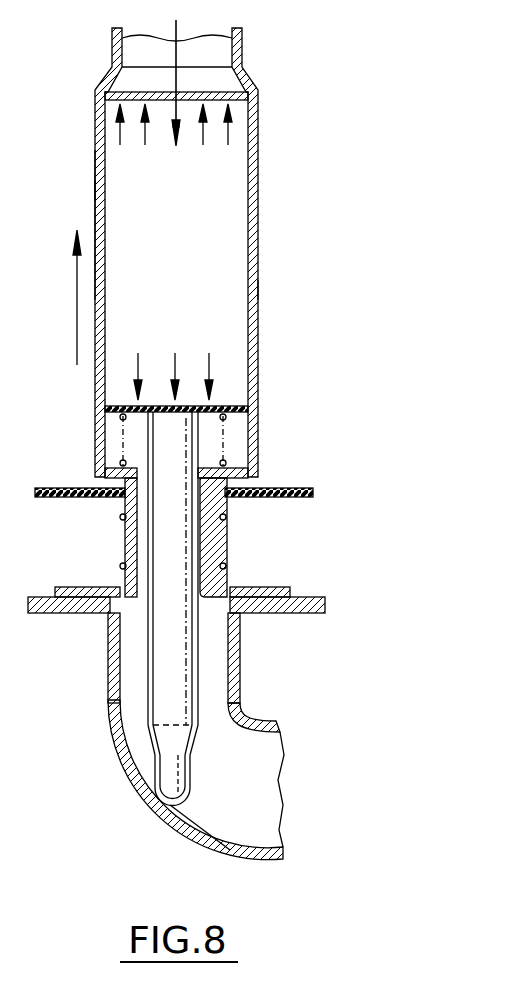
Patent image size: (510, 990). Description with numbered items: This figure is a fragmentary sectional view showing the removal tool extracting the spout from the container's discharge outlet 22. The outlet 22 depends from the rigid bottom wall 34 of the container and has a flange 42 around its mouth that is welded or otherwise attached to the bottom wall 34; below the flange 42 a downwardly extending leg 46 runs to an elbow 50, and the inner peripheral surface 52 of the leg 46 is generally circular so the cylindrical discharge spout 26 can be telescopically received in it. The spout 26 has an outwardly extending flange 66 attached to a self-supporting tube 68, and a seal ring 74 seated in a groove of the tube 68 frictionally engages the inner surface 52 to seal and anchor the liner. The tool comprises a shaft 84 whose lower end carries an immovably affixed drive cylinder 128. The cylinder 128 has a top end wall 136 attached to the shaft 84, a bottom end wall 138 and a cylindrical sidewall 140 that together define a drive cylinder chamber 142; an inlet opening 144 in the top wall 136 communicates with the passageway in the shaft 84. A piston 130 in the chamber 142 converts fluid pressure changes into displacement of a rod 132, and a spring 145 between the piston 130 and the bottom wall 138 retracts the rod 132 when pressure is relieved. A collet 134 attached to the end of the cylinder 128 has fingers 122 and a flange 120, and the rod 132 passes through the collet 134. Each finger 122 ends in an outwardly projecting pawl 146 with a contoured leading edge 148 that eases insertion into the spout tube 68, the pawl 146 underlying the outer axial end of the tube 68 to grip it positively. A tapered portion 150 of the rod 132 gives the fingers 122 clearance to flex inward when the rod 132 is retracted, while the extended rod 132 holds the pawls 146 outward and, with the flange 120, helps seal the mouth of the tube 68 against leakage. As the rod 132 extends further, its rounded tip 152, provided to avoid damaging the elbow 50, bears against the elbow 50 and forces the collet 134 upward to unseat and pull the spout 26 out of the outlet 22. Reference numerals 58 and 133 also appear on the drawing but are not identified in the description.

The discharge outlet 22 is at (287, 778).
The discharge spout 26 is at (229, 550).
The bottom wall 34 is at (50, 613).
The flange 42 is at (290, 588).
The downwardly extending leg 46 is at (242, 680).
The elbow 50 is at (160, 808).
The inner peripheral surface 52 is at (137, 742).
The upper left flange 58 is at (40, 488).
The flange 66 is at (290, 488).
The tube 68 is at (120, 566).
The seal ring 74 is at (120, 517).
The shaft 84 is at (111, 50).
The flange 120 is at (238, 478).
The finger 122 is at (210, 535).
The drive cylinder 128 is at (281, 204).
The piston 130 is at (110, 405).
The rod 132 is at (205, 443).
The chamber wall 133 is at (94, 190).
The collet 134 is at (135, 532).
The top end wall 136 is at (240, 90).
The bottom end wall 138 is at (110, 470).
The sidewall 140 is at (95, 150).
The drive cylinder chamber 142 is at (200, 219).
The inlet opening 144 is at (183, 92).
The spring 145 is at (224, 432).
The pawl 146 is at (115, 613).
The contoured leading edge 148 is at (115, 648).
The tapered portion 150 is at (190, 745).
The rounded tip 152 is at (188, 798).